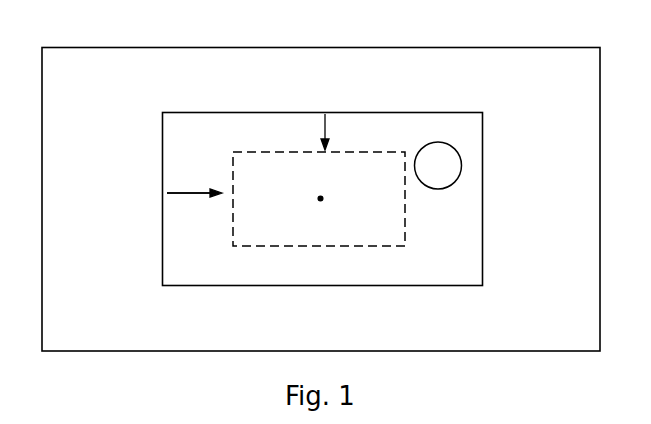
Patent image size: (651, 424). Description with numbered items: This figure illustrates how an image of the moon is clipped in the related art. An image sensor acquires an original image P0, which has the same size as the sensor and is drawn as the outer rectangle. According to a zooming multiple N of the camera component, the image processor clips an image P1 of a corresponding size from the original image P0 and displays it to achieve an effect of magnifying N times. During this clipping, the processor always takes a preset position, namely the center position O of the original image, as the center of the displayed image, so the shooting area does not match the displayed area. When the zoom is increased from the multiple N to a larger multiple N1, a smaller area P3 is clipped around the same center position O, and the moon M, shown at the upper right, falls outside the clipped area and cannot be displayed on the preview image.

The original image P0 is at (231, 47).
The image P1 is at (251, 112).
The dashed sub-region P3 is at (275, 151).
The moon M is at (443, 163).
The center position O is at (328, 212).
The zooming multiple N is at (168, 191).
The zooming multiple N1 is at (194, 211).